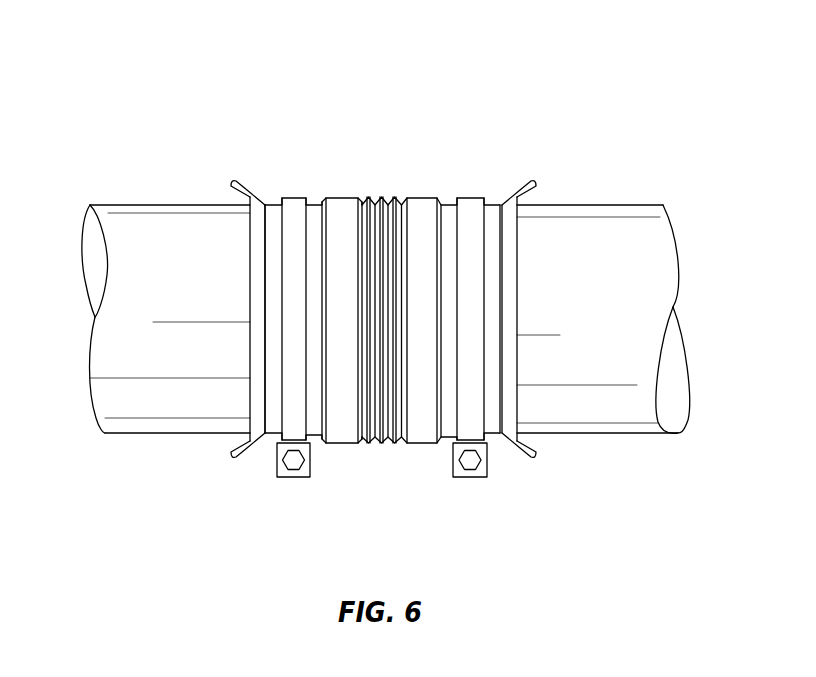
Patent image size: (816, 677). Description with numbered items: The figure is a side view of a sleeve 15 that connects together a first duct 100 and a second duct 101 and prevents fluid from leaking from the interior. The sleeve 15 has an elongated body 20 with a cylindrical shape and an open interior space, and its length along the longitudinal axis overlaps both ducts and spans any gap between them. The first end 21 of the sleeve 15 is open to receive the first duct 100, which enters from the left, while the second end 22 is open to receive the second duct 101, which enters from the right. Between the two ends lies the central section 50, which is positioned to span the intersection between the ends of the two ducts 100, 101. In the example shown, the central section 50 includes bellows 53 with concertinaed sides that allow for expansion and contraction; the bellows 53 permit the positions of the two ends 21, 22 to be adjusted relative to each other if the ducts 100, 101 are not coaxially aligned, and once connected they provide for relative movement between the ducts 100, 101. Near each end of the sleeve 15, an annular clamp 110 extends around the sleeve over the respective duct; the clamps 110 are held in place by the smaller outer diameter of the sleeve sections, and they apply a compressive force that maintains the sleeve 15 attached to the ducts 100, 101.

The sleeve 15 is at (258, 117).
The elongated body 20 is at (453, 425).
The first end 21 is at (247, 235).
The second end 22 is at (520, 233).
The central section 50 is at (388, 312).
The bellows 53 is at (395, 441).
The first duct 100 is at (162, 225).
The second duct 101 is at (608, 217).
The clamp 110 is at (290, 477).